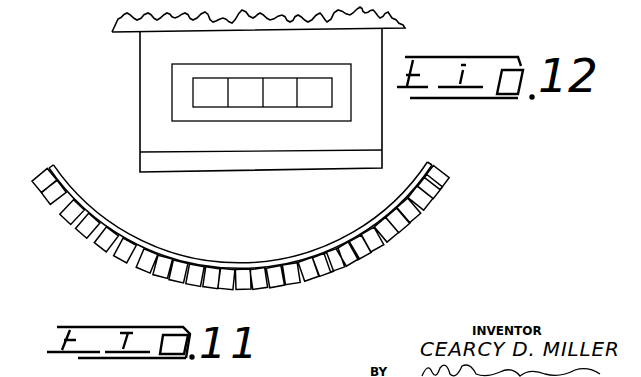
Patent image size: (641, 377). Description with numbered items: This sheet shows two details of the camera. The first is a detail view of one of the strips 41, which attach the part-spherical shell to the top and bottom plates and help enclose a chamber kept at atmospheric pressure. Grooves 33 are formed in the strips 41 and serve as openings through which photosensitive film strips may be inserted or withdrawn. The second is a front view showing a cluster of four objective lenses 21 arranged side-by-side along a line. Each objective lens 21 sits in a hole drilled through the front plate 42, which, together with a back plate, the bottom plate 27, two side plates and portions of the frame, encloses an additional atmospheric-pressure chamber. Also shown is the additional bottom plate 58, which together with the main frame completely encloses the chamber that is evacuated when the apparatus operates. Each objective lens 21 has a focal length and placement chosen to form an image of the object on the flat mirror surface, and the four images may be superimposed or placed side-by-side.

In FIG. 12, the objective lens 21 is at (217, 78).
In FIG. 12, the bottom plate 27 is at (367, 150).
In FIG. 11, the groove 33 is at (88, 240).
In FIG. 11, the strip 41 is at (95, 220).
In FIG. 12, the front plate 42 is at (383, 121).
In FIG. 12, the additional bottom plate 58 is at (389, 28).